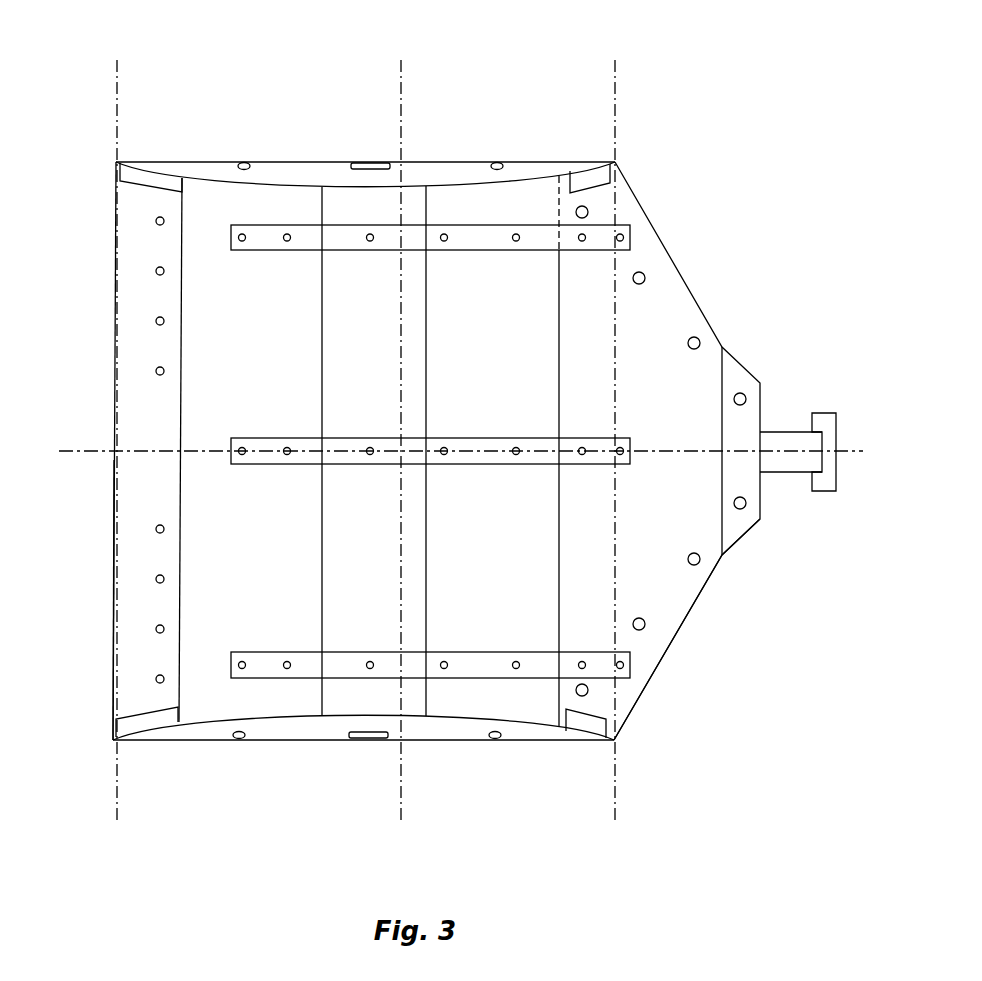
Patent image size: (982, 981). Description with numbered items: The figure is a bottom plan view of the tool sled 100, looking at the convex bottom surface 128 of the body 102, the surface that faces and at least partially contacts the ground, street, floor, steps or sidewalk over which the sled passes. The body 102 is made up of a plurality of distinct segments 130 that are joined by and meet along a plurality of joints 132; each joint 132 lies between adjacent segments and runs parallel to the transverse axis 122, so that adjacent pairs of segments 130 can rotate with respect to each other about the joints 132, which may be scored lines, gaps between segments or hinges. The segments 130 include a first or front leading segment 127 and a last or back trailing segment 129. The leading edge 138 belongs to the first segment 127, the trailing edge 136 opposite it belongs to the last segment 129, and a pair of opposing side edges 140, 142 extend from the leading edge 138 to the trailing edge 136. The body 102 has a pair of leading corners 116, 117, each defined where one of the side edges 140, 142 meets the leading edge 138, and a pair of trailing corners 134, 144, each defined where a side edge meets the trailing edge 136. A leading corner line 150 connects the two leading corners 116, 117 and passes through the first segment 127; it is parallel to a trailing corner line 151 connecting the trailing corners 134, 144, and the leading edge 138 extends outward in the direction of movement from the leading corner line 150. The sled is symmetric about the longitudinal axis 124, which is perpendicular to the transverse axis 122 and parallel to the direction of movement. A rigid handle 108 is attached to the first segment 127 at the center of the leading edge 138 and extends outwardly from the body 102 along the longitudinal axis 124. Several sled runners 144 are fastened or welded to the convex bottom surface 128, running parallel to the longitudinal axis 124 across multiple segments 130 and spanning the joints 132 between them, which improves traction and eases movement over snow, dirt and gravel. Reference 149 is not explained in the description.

The tool sled 100 is at (155, 22).
The body 102 is at (111, 347).
The rigid handle 108 is at (781, 428).
The leading corner 116 is at (614, 740).
The leading corner 117 is at (616, 162).
The transverse axis 122 is at (401, 80).
The longitudinal axis 124 is at (846, 453).
The first or front leading segment 127 is at (667, 628).
The convex bottom surface 128 is at (220, 388).
The last or back trailing segment 129 is at (127, 516).
The distinct segments 130 is at (127, 266).
The joints 132 is at (182, 340).
The trailing corner 134 is at (116, 162).
The trailing edge 136 is at (113, 650).
The leading edge 138 is at (703, 595).
The side edge 140 is at (322, 740).
The side edge 142 is at (445, 162).
The sled runner 144 is at (577, 250).
The left reference line 149 is at (111, 740).
The leading corner line 150 is at (614, 797).
The trailing corner line 151 is at (117, 98).